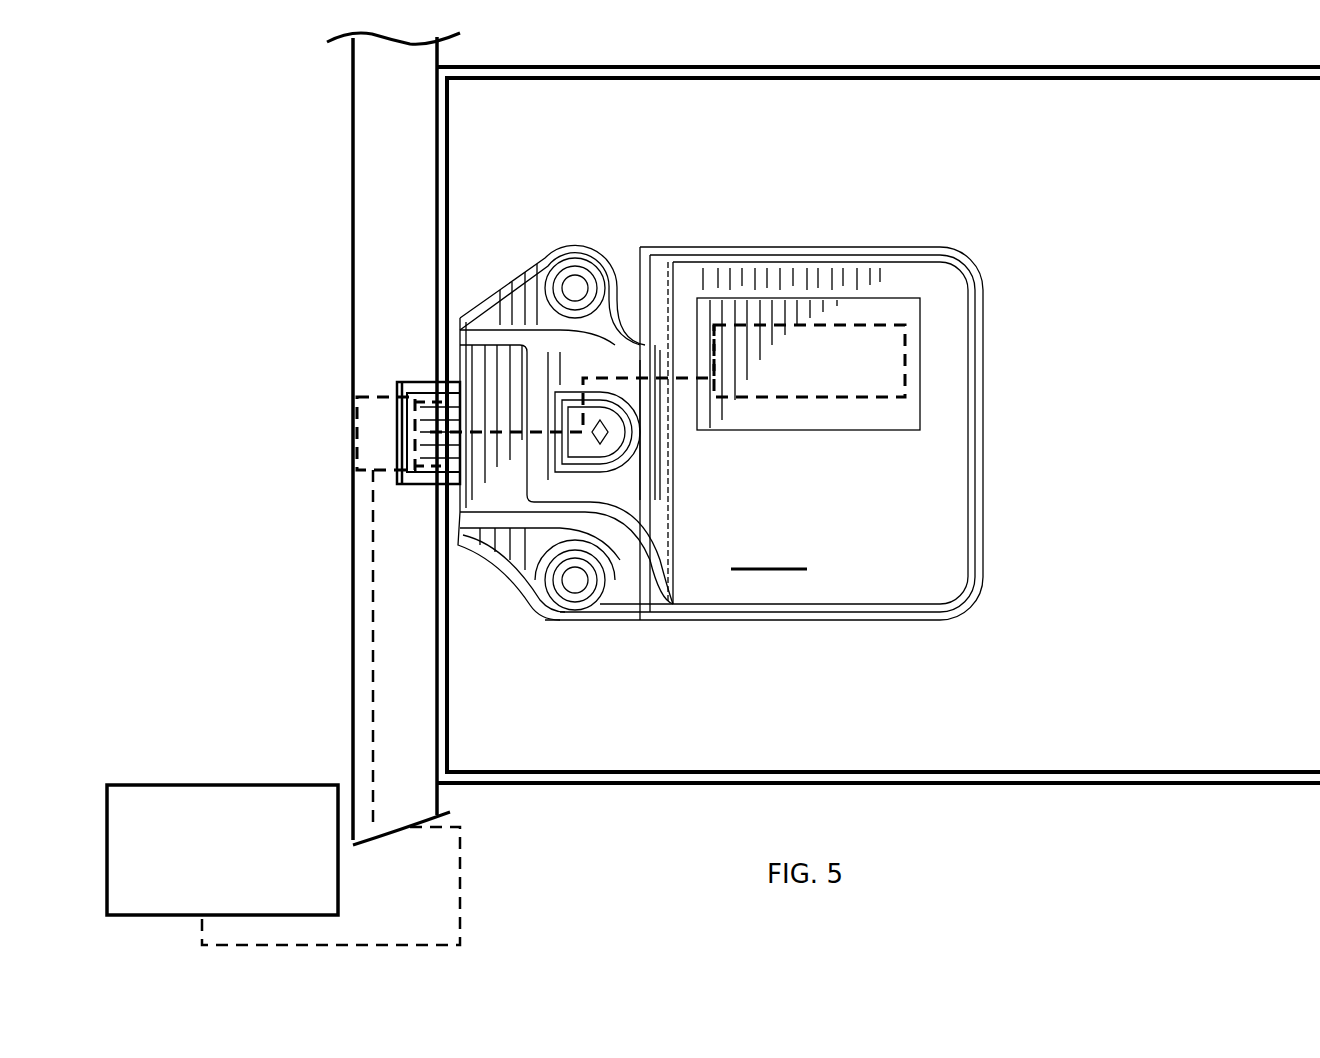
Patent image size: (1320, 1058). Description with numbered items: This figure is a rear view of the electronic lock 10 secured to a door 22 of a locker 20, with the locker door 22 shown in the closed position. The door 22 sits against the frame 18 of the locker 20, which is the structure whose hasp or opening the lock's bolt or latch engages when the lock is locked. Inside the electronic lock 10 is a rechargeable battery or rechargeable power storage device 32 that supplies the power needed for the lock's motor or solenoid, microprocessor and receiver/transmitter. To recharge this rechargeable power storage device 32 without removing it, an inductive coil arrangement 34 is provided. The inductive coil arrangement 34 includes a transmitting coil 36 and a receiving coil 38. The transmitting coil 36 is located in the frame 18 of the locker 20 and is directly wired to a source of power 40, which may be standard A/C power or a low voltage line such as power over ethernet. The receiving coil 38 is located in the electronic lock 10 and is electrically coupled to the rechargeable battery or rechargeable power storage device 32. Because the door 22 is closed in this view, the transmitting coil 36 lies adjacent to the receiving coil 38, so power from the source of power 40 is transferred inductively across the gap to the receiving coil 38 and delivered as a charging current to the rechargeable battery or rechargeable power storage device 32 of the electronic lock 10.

The electronic lock 10 is at (855, 232).
The frame 18 is at (393, 227).
The locker 20 is at (337, 155).
The door 22 is at (1155, 271).
The rechargeable battery or rechargeable power storage device 32 is at (880, 397).
The inductive coil arrangement 34 is at (390, 378).
The transmitting coil 36 is at (352, 437).
The receiving coil 38 is at (452, 513).
The source of power 40 is at (222, 785).